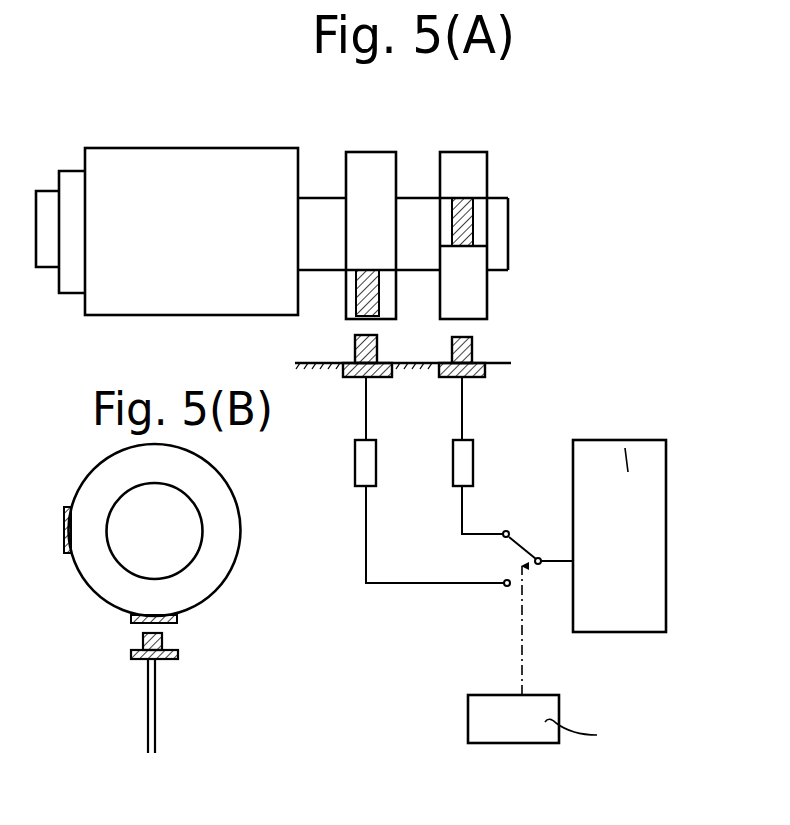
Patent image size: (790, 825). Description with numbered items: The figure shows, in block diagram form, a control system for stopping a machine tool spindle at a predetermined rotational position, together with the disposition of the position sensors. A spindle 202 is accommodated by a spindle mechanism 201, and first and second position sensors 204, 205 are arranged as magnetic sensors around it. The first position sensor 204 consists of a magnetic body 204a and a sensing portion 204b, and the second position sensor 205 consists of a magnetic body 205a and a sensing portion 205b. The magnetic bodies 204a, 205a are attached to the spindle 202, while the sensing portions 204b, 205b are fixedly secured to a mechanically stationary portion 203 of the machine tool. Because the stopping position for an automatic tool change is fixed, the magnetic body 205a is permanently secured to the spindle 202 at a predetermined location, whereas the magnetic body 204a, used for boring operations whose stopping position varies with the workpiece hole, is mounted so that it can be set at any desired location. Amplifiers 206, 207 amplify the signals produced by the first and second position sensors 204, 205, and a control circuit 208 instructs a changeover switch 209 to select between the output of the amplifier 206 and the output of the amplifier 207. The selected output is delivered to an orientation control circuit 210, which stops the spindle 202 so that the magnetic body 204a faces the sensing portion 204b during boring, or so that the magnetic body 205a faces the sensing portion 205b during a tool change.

In FIG. 5A, the spindle mechanism 201 is at (212, 158).
In FIG. 5A, the spindle 202 is at (318, 198).
In FIG. 5B, the spindle 202 is at (197, 518).
In FIG. 5A, the mechanically stationary portion 203 is at (330, 370).
In FIG. 5A, the first position sensor 204 is at (583, 286).
In FIG. 5A, the magnetic body 204a is at (473, 246).
In FIG. 5B, the magnetic body 204a is at (177, 620).
In FIG. 5A, the sensing portion 204b is at (472, 350).
In FIG. 5B, the sensing portion 204b is at (131, 644).
In FIG. 5A, the second position sensor 205 is at (262, 322).
In FIG. 5A, the magnetic body 205a is at (346, 318).
In FIG. 5B, the magnetic body 205a is at (66, 552).
In FIG. 5A, the sensing portion 205b is at (355, 348).
In FIG. 5A, the amplifier 206 is at (376, 471).
In FIG. 5A, the amplifier 207 is at (473, 468).
In FIG. 5A, the control circuit 208 is at (508, 745).
In FIG. 5A, the changeover switch 209 is at (527, 531).
In FIG. 5A, the orientation control circuit 210 is at (608, 632).